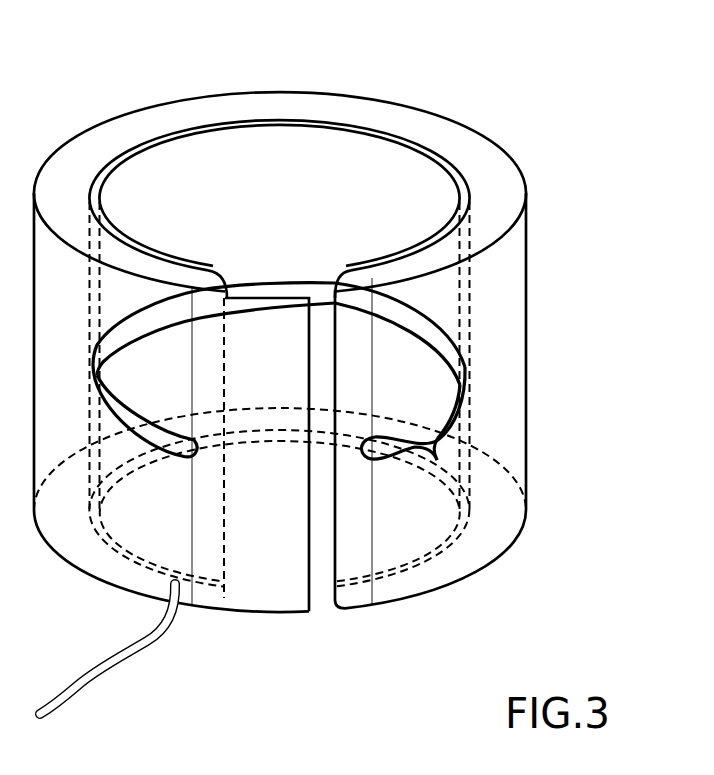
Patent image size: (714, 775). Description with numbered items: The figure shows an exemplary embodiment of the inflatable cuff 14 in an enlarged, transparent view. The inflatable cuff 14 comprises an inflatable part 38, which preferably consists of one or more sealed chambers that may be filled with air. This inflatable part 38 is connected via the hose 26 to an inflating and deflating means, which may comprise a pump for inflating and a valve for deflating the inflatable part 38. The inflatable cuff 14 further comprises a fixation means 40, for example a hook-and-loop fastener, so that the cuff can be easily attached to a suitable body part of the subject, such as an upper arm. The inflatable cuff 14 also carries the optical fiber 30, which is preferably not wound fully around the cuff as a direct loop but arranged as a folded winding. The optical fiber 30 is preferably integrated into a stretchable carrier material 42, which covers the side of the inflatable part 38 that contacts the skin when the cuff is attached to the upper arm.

The inflatable cuff 14 is at (320, 367).
The hose 26 is at (117, 653).
The optical fiber 30 is at (450, 317).
The inflatable part 38 is at (417, 123).
The fixation means 40 is at (263, 597).
The stretchable carrier material 42 is at (335, 122).